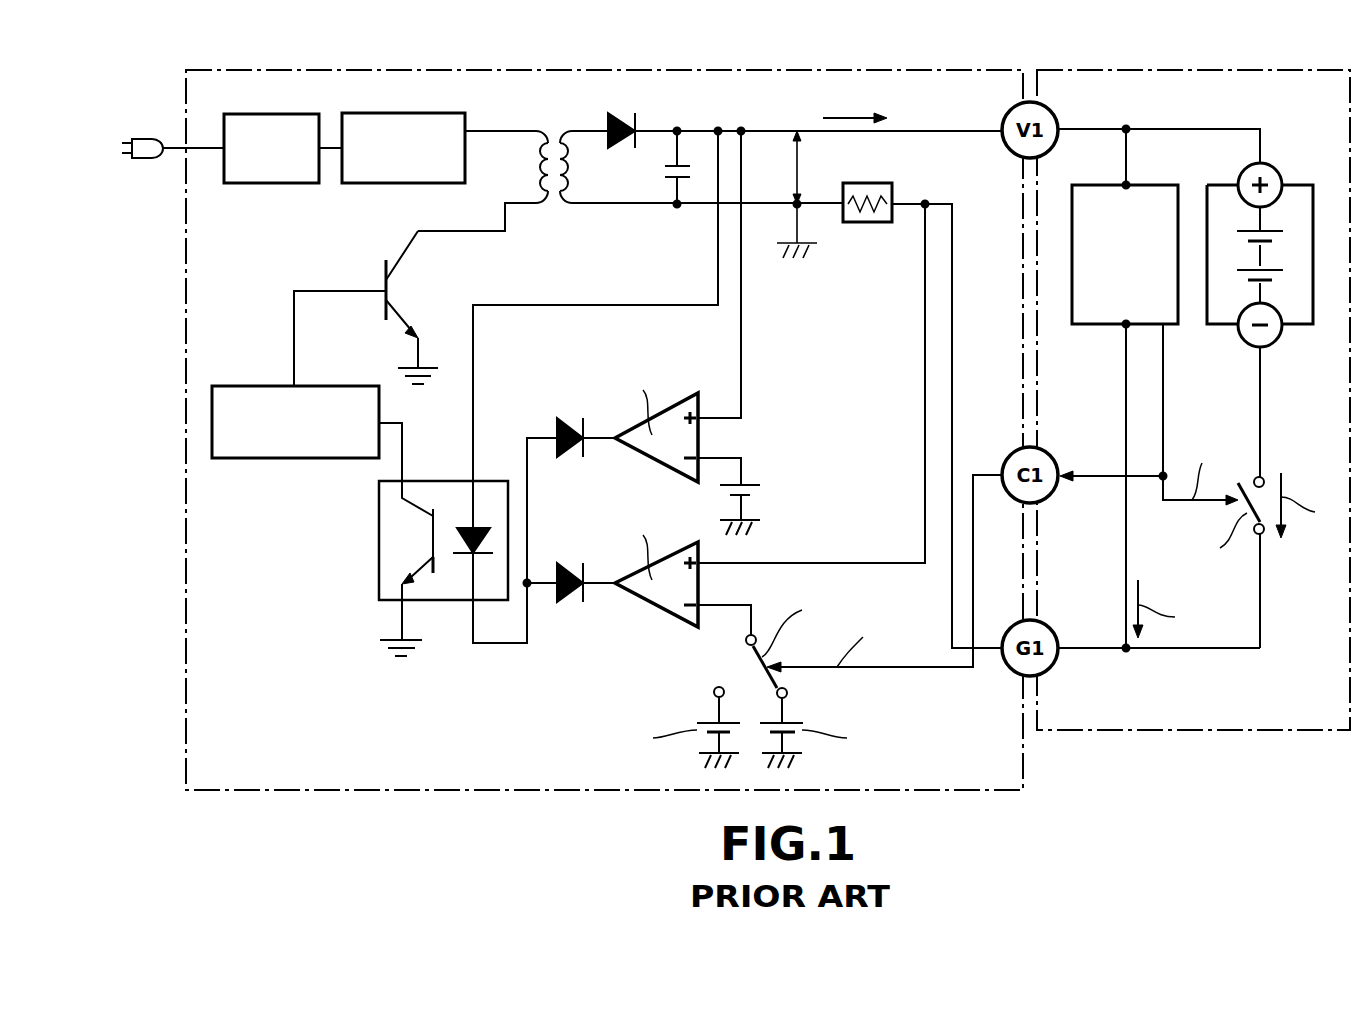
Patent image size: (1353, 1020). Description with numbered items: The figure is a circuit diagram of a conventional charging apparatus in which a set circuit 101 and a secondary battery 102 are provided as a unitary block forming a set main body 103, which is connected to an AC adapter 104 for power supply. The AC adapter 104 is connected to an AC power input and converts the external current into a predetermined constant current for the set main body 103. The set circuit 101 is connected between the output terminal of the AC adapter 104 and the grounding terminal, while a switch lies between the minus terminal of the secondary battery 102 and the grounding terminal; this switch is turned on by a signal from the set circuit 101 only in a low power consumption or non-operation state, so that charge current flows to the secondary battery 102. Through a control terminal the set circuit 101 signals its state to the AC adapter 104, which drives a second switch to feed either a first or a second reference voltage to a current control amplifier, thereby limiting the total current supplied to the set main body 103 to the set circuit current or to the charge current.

The set circuit 101 is at (1097, 324).
The secondary battery 102 is at (1293, 185).
The set main body 103 is at (1167, 67).
The AC adapter 104 is at (687, 70).